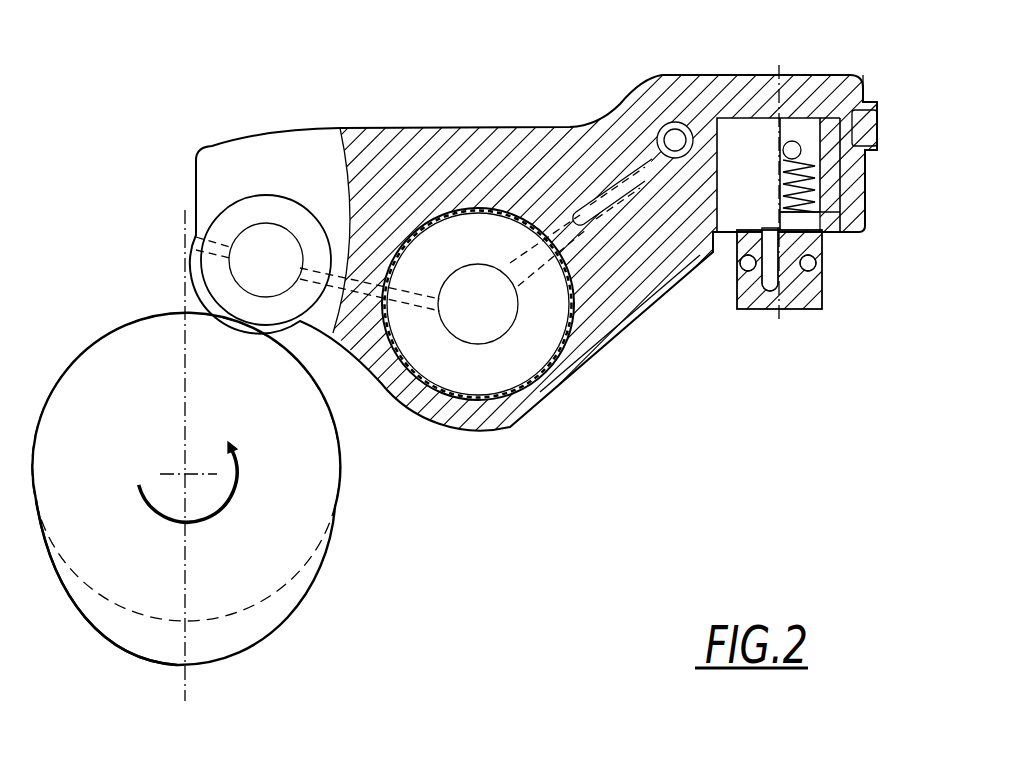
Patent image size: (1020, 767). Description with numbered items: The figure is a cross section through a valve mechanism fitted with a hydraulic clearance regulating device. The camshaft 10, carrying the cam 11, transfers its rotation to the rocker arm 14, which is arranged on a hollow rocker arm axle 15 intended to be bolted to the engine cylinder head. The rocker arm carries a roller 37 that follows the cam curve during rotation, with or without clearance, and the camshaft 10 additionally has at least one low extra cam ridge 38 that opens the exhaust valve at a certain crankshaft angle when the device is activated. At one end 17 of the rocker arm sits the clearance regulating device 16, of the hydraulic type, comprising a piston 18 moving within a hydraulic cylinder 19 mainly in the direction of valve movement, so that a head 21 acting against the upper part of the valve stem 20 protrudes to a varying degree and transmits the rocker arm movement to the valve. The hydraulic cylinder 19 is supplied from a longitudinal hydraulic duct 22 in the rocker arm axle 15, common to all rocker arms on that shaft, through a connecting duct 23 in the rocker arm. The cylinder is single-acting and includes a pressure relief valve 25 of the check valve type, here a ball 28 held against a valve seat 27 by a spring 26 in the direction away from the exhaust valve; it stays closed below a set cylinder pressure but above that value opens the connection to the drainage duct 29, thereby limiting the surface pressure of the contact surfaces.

The camshaft 10 is at (340, 503).
The cam 11 is at (146, 643).
The rocker arm 14 is at (570, 120).
The rocker arm axle 15 is at (528, 367).
The clearance regulating device 16 is at (735, 240).
The end of the rocker arm 17 is at (823, 117).
The piston 18 is at (738, 118).
The hydraulic cylinder 19 is at (725, 118).
The valve stem 20 is at (805, 310).
The head 21 is at (787, 298).
The hydraulic duct 22 is at (478, 335).
The connecting duct 23 is at (560, 235).
The pressure relief valve 25 is at (822, 230).
The spring 26 is at (840, 117).
The valve seat 27 is at (793, 117).
The ball 28 is at (775, 117).
The drainage duct 29 is at (815, 257).
The roller 37 is at (197, 262).
The extra cam ridge 38 is at (140, 317).